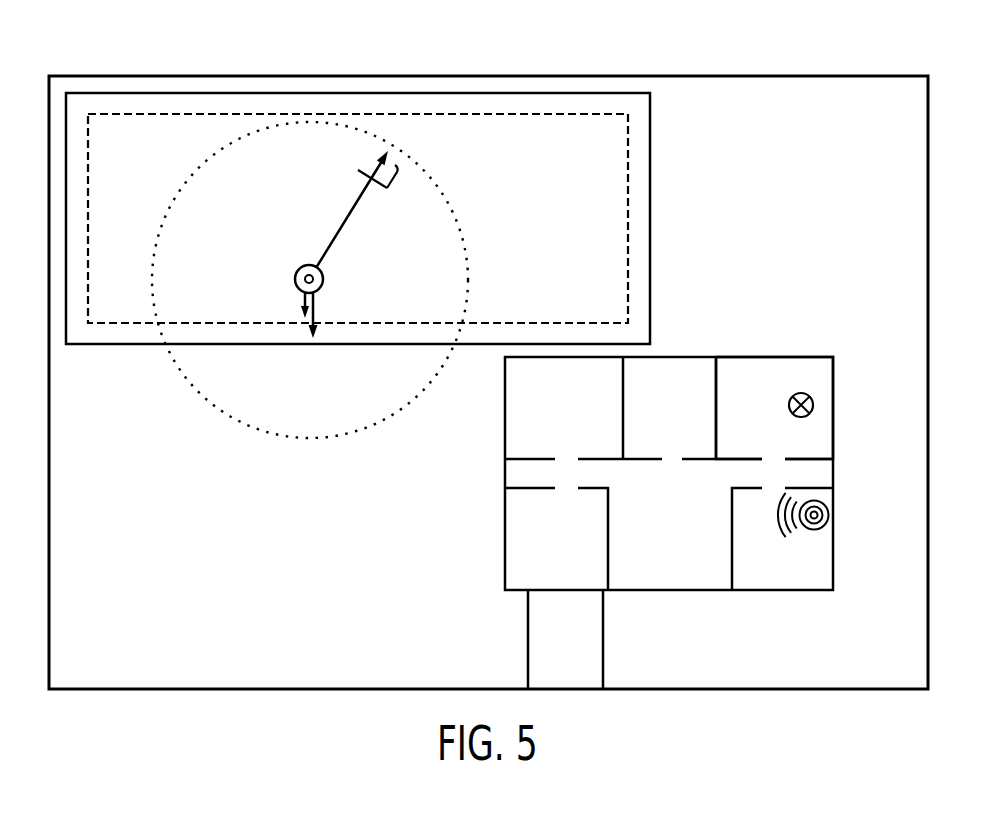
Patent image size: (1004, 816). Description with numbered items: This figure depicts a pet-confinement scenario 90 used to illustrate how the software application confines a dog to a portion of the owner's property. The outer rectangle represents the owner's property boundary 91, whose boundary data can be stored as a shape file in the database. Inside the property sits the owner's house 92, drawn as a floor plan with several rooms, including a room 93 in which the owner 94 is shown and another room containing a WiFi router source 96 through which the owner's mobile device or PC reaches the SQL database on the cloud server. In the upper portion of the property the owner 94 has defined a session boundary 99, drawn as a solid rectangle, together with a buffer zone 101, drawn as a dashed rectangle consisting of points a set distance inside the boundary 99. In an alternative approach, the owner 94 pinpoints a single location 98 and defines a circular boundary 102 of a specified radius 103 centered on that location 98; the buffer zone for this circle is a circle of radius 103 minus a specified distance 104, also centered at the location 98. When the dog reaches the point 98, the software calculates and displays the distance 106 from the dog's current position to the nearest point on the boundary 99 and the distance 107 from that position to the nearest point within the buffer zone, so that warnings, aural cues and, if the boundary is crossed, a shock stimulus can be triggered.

The pet-confinement scenario 90 is at (815, 55).
The property boundary 91 is at (928, 240).
The owner's house 92 is at (492, 470).
The room 93 is at (748, 372).
The owner 94 is at (800, 393).
The WiFi router source 96 is at (827, 522).
The pinpointed location 98 is at (324, 281).
The session boundary 99 is at (650, 160).
The buffer zone 101 is at (627, 214).
The circular boundary 102 is at (478, 226).
The radius 103 is at (342, 227).
The distance 104 is at (393, 188).
The distance to boundary 106 is at (316, 316).
The distance to buffer zone 107 is at (302, 297).